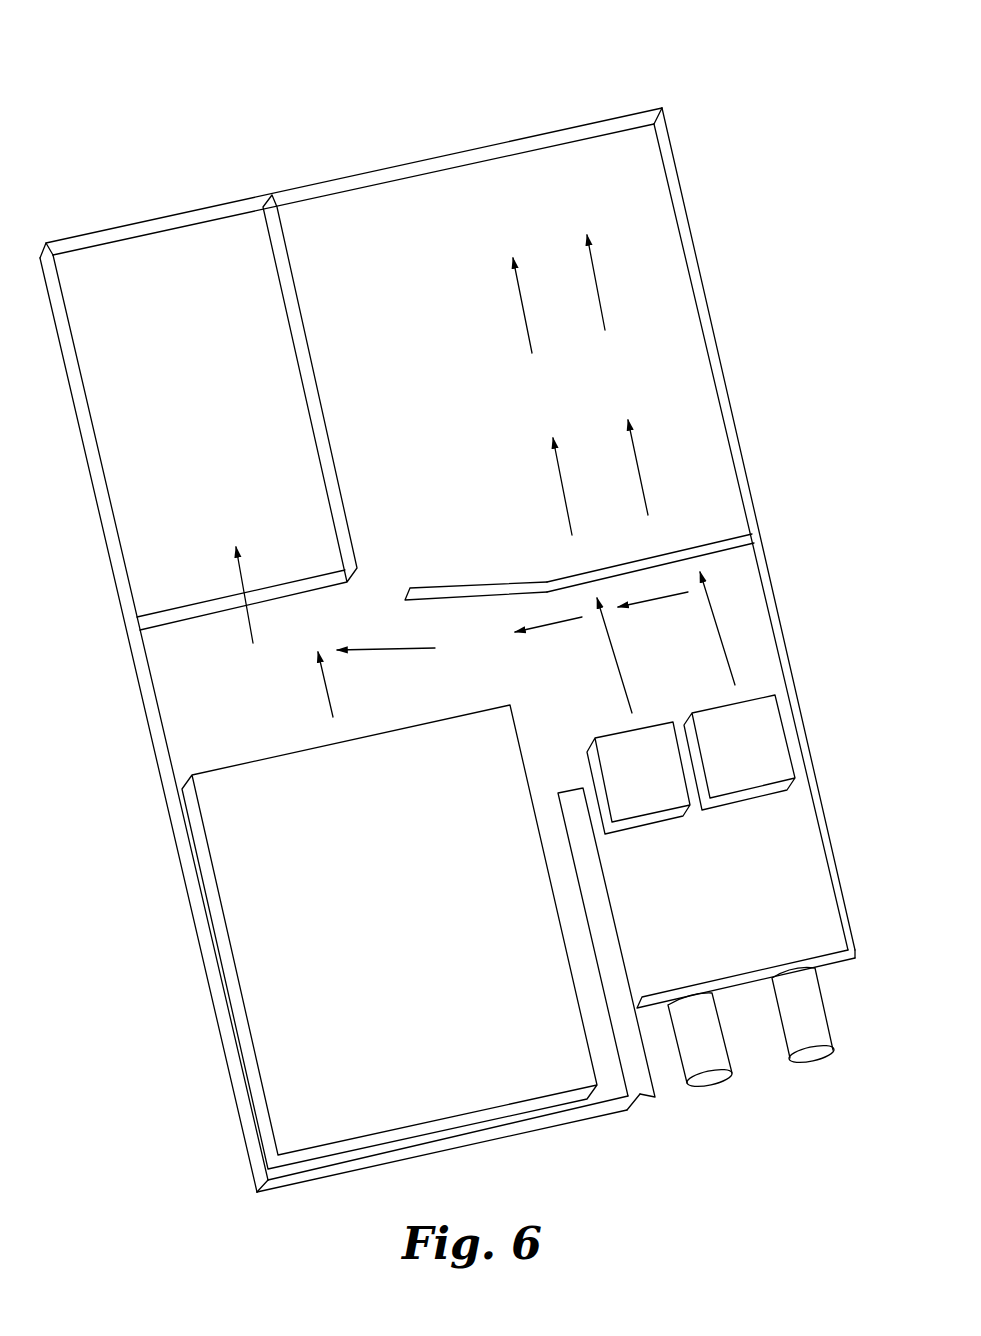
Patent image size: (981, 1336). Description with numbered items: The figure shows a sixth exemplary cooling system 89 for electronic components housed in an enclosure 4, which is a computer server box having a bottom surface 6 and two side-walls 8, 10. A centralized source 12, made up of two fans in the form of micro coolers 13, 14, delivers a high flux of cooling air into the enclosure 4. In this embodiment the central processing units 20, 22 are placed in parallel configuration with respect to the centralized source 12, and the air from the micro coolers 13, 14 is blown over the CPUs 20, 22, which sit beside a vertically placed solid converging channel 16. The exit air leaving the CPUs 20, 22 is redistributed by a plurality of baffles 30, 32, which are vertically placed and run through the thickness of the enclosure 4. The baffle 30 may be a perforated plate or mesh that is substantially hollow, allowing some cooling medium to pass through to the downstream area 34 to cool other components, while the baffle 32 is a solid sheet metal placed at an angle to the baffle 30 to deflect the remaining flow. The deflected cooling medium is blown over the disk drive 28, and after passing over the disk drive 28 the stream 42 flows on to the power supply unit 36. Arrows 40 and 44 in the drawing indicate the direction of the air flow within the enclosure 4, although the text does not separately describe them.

The sixth exemplary cooling system 89 is at (489, 602).
The enclosure 4 is at (342, 187).
The bottom surface 6 is at (167, 702).
The side-wall 8 is at (725, 398).
The side-wall 10 is at (185, 870).
The centralized source 12 is at (763, 1089).
The micro cooler 13 is at (710, 1085).
The micro cooler 14 is at (813, 1049).
The converging channel 16 is at (848, 930).
The central processing unit 20 is at (767, 750).
The central processing unit 22 is at (653, 805).
The disk drive 28 is at (347, 1128).
The baffle 30 is at (717, 547).
The baffle 32 is at (448, 592).
The downstream area 34 is at (598, 293).
The power supply unit 36 is at (187, 252).
The airflow path 40 is at (393, 648).
The stream 42 is at (330, 712).
The airflow arrow 44 is at (240, 578).